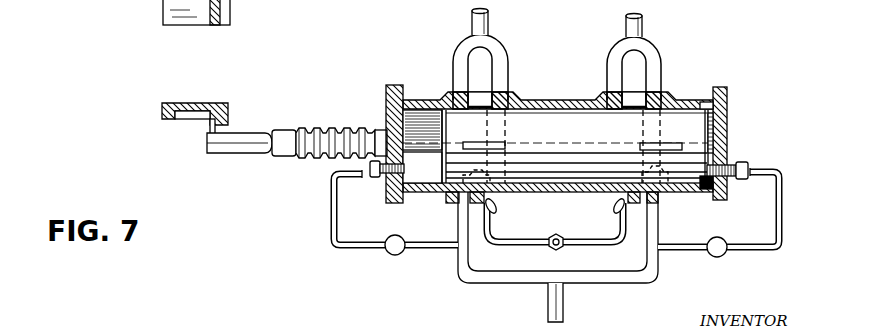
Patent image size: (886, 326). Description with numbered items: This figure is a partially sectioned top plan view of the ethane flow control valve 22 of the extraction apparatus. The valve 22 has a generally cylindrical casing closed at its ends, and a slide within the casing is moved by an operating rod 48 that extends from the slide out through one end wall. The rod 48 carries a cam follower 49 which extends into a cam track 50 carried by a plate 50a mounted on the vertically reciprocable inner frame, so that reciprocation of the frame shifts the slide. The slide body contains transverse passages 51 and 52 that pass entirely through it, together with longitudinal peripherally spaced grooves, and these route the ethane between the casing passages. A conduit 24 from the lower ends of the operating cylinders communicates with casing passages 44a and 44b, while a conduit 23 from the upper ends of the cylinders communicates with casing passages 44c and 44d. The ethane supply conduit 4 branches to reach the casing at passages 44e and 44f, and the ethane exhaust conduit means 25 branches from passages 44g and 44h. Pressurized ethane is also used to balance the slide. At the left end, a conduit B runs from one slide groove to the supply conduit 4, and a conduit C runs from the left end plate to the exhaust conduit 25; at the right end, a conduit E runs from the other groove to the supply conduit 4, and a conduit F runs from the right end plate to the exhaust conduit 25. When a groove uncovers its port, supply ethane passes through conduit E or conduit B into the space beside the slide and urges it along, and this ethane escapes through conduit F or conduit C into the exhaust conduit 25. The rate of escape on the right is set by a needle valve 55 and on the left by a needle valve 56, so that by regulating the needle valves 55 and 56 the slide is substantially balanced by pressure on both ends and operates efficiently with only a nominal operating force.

The ethane supply conduit 4 is at (565, 228).
The ethane flow control valve 22 is at (541, 103).
The conduit 23 is at (488, 26).
The conduit 24 is at (627, 26).
The ethane exhaust conduit means 25 is at (547, 312).
The casing passage 44a is at (615, 92).
The casing passage 44b is at (662, 92).
The cylinder passage 44c is at (455, 92).
The cylinder passage 44d is at (510, 92).
The casing passage 44e is at (490, 210).
The casing passage 44f is at (630, 208).
The casing passage 44g is at (455, 202).
The casing passage 44h is at (657, 208).
The operating rod 48 is at (242, 148).
The cam follower 49 is at (208, 134).
The cam track 50 is at (197, 105).
The plate 50a is at (229, 109).
The transverse passage 51 is at (504, 140).
The transverse passage 52 is at (648, 140).
The needle valve 55 is at (721, 243).
The needle valve 56 is at (406, 232).
The conduit B is at (500, 208).
The conduit C is at (330, 222).
The conduit E is at (611, 208).
The conduit F is at (782, 240).